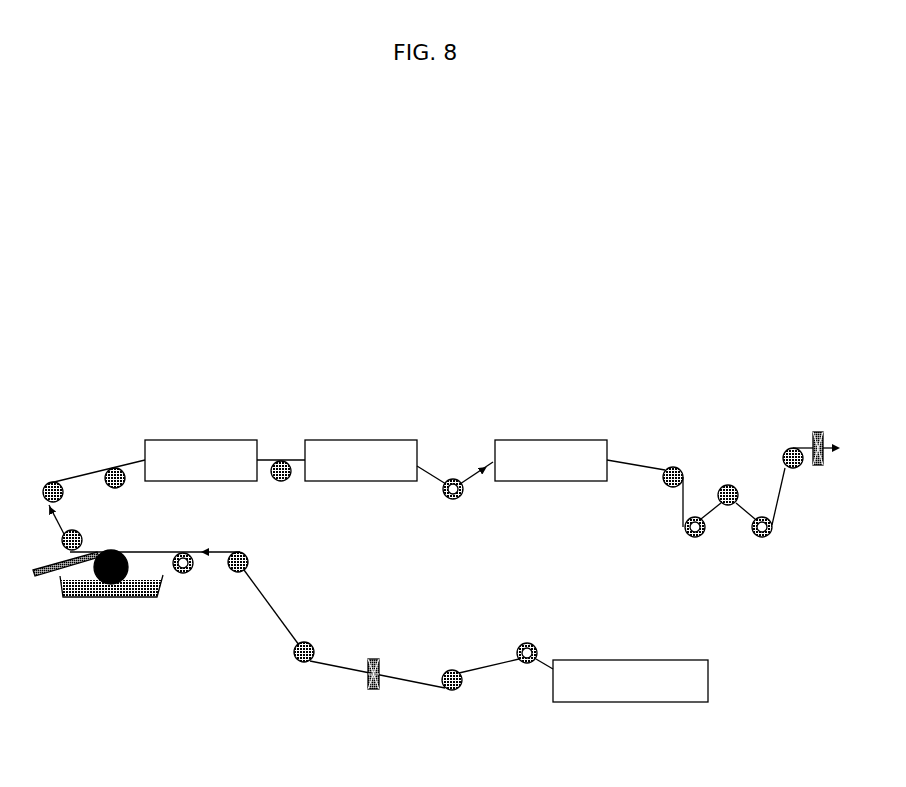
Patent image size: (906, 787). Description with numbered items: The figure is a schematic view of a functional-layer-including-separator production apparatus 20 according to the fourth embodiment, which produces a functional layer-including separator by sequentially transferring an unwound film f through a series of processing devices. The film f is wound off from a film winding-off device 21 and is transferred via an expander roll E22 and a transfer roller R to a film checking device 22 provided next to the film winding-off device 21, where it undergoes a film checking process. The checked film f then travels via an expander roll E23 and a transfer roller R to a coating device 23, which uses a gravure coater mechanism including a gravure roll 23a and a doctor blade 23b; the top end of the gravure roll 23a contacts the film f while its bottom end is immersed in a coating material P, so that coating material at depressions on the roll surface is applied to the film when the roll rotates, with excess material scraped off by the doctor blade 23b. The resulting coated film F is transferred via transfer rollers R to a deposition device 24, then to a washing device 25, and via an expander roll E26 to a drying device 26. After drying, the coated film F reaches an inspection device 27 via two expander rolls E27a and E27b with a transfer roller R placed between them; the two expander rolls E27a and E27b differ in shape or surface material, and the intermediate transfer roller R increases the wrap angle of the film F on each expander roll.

The functional-layer-including-separator production apparatus 20 is at (410, 277).
The film winding-off device 21 is at (636, 659).
The film checking device 22 is at (372, 690).
The coating device 23 is at (93, 621).
The gravure roll 23a is at (116, 585).
The doctor blade 23b is at (40, 576).
The deposition device 24 is at (205, 439).
The washing device 25 is at (362, 439).
The drying device 26 is at (555, 439).
The inspection device 27 is at (816, 430).
The expander roll E22 is at (528, 643).
The expander roll E23 is at (185, 574).
The expander roll E26 is at (450, 500).
The expander roll E27a is at (691, 538).
The expander roll E27b is at (758, 538).
The coated film F is at (95, 467).
The film f is at (492, 660).
The coating material P is at (100, 586).
The transfer roller R is at (63, 494).